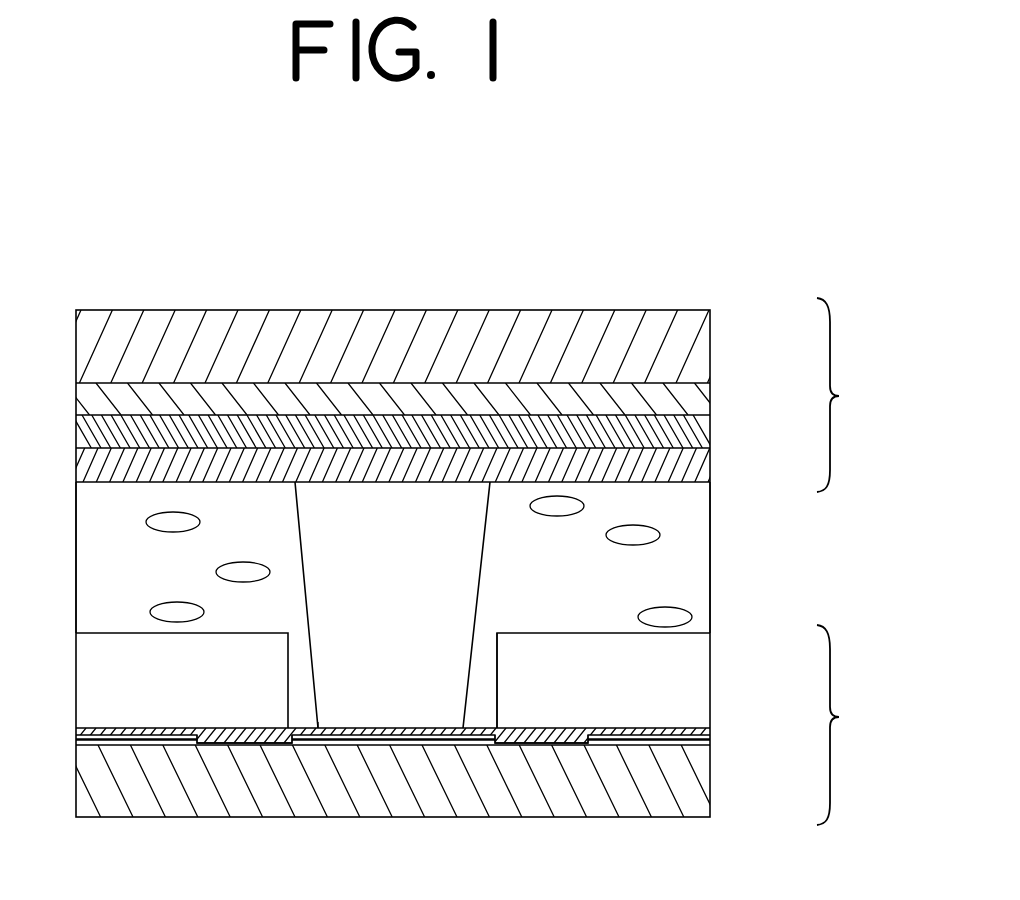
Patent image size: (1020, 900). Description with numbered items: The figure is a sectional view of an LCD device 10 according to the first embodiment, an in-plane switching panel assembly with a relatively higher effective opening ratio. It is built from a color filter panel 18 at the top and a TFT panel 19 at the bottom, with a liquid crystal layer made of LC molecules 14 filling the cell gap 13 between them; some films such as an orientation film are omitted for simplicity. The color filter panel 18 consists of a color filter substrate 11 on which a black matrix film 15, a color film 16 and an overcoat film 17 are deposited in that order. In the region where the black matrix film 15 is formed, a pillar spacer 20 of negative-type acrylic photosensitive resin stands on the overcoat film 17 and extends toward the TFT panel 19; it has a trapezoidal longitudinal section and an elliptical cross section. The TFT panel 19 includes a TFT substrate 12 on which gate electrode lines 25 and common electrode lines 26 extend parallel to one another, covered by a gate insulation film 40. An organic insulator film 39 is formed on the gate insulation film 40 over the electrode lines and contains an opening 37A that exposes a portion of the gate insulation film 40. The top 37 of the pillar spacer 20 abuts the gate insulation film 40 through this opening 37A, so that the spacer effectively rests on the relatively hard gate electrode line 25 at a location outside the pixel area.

The LCD device 10 is at (636, 220).
The color filter substrate 11 is at (710, 342).
The TFT substrate 12 is at (700, 787).
The cell gap 13 is at (695, 567).
The LC molecules 14 is at (650, 533).
The black matrix film 15 is at (710, 393).
The color film 16 is at (710, 428).
The overcoat film 17 is at (710, 463).
The color filter panel 18 is at (856, 395).
The TFT panel 19 is at (856, 725).
The pillar spacer 20 is at (468, 543).
The gate electrode line 25 is at (450, 745).
The common electrode line 26 is at (710, 745).
The top of the pillar spacer 37 is at (310, 722).
The opening 37A is at (488, 685).
The organic insulator film 39 is at (697, 673).
The gate insulation film 40 is at (710, 732).